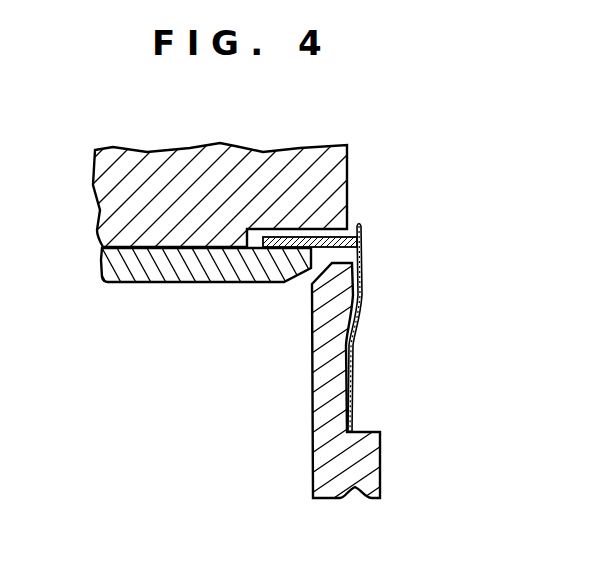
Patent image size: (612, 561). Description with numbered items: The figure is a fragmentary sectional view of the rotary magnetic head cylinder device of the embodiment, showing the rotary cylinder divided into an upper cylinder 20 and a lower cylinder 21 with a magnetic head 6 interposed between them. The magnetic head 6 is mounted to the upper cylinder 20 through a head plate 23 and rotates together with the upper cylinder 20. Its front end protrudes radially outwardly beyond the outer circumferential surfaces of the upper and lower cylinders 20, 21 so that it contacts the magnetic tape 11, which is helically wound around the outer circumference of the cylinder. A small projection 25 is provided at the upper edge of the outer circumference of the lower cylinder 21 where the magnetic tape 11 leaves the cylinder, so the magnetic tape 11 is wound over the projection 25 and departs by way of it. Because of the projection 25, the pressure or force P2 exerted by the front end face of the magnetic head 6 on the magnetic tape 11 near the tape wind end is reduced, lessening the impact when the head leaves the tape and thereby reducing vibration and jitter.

The upper cylinder 20 is at (348, 165).
The head plate 23 is at (200, 277).
The magnetic head 6 is at (298, 250).
The lower cylinder 21 is at (316, 354).
The projection 25 is at (351, 288).
The magnetic tape 11 is at (351, 379).
The pressure exerted by the head on the tape P2 is at (359, 222).